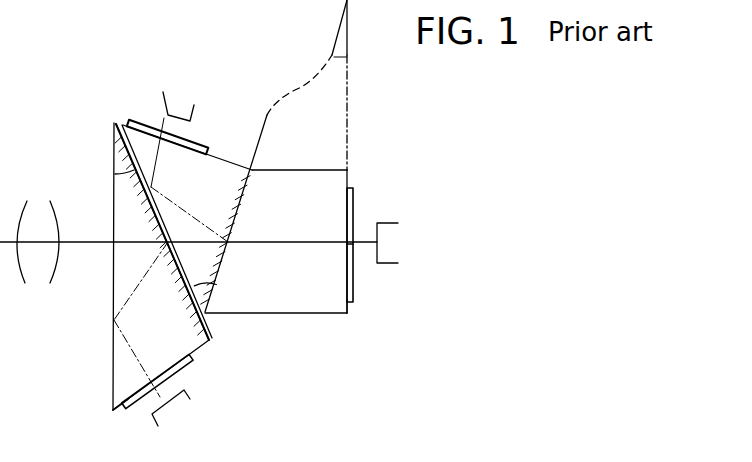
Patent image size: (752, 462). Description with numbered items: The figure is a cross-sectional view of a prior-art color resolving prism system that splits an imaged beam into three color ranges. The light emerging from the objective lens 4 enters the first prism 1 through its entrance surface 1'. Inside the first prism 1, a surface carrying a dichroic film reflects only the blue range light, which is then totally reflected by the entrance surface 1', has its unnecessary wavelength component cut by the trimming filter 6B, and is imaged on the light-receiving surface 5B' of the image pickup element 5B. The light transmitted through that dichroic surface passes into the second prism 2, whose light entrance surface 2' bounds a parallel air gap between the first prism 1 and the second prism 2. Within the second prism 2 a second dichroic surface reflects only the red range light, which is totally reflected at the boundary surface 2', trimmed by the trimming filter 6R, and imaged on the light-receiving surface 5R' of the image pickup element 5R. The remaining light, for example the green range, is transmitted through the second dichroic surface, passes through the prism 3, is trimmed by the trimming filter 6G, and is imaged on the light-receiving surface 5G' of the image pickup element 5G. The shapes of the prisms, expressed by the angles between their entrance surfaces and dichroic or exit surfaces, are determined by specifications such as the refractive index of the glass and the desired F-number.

The first prism 1 is at (142, 266).
The entrance surface 1' is at (133, 236).
The second prism 2 is at (187, 140).
The boundary surface 2' is at (189, 181).
The third prism 3 is at (304, 241).
The objective lens 4 is at (40, 210).
The image pickup element 5R is at (184, 102).
The light-receiving surface 5R' is at (165, 109).
The image pickup element 5B is at (173, 411).
The light-receiving surface 5B' is at (131, 419).
The image pickup element 5G is at (395, 243).
The light-receiving surface 5G' is at (372, 278).
The trimming filter 6R is at (117, 123).
The trimming filter 6G is at (353, 192).
The trimming filter 6B is at (194, 358).